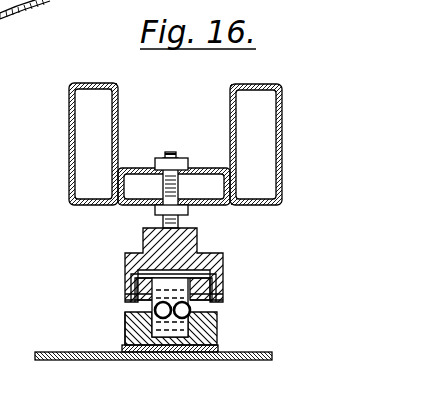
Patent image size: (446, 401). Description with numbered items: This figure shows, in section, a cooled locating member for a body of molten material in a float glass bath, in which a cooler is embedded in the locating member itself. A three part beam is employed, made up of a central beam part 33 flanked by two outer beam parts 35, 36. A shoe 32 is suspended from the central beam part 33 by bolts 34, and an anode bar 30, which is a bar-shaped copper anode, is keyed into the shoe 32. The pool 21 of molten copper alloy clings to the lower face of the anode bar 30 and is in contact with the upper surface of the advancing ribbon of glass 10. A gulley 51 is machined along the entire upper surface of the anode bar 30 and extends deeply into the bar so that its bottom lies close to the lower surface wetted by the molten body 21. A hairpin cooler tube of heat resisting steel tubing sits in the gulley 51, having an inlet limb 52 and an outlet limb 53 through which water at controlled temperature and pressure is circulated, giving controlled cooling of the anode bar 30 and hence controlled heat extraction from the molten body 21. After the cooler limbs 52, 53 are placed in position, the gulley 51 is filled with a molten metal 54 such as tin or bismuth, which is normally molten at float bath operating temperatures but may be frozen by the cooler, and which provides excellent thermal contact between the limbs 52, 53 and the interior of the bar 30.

The ribbon of glass 10 is at (120, 357).
The pool of molten copper alloy 21 is at (217, 346).
The anode bar 30 is at (217, 317).
The shoe 32 is at (220, 257).
The central beam part 33 is at (197, 168).
The bolts 34 is at (176, 219).
The beam part 35 is at (90, 83).
The beam part 36 is at (263, 84).
The gulley 51 is at (148, 289).
The inlet limb 52 is at (152, 312).
The outlet limb 53 is at (195, 310).
The molten metal 54 is at (125, 327).